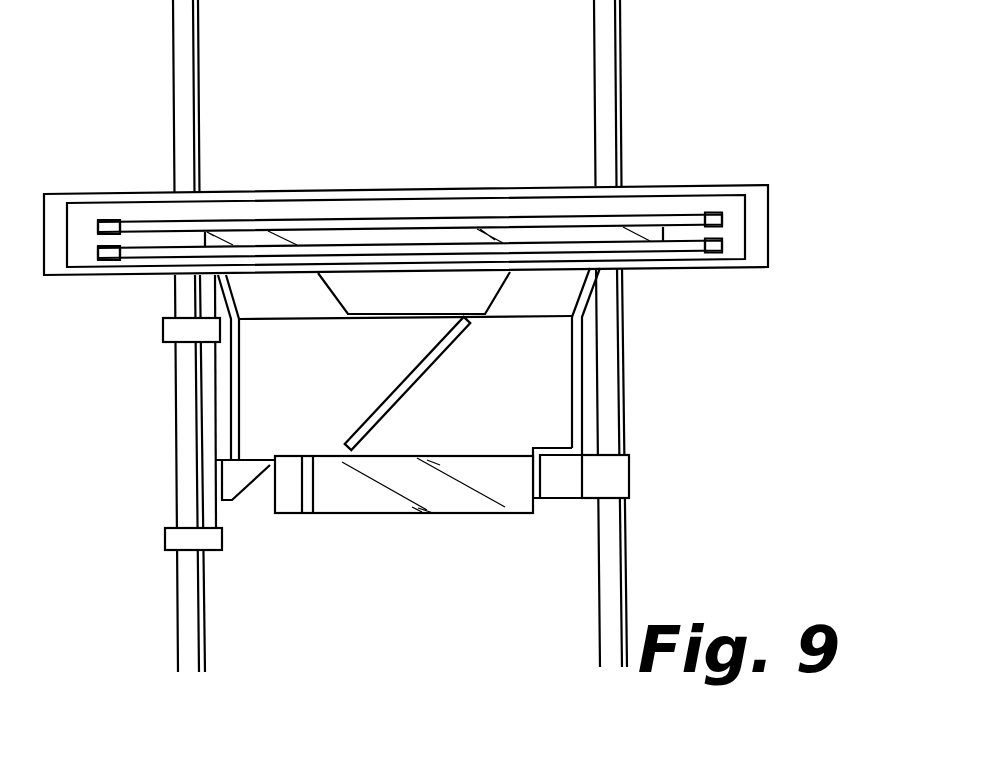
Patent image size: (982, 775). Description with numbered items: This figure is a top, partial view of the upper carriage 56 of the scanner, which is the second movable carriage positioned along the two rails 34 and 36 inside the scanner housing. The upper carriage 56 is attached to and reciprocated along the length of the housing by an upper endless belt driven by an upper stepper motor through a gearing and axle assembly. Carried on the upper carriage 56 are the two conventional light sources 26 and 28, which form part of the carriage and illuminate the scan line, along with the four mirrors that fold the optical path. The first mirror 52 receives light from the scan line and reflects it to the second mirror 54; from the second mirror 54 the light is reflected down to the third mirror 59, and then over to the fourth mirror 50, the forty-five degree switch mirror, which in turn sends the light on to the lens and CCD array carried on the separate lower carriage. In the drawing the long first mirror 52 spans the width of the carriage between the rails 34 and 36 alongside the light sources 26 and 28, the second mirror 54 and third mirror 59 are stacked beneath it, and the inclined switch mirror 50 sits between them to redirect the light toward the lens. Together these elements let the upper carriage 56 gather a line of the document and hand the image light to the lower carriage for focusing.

The light source 26 is at (680, 213).
The light source 28 is at (683, 252).
The rail 34 is at (183, 63).
The rail 36 is at (605, 49).
The fourth mirror 50 is at (417, 378).
The first mirror 52 is at (363, 237).
The second mirror 54 is at (404, 518).
The upper carriage 56 is at (540, 368).
The third mirror 59 is at (450, 495).